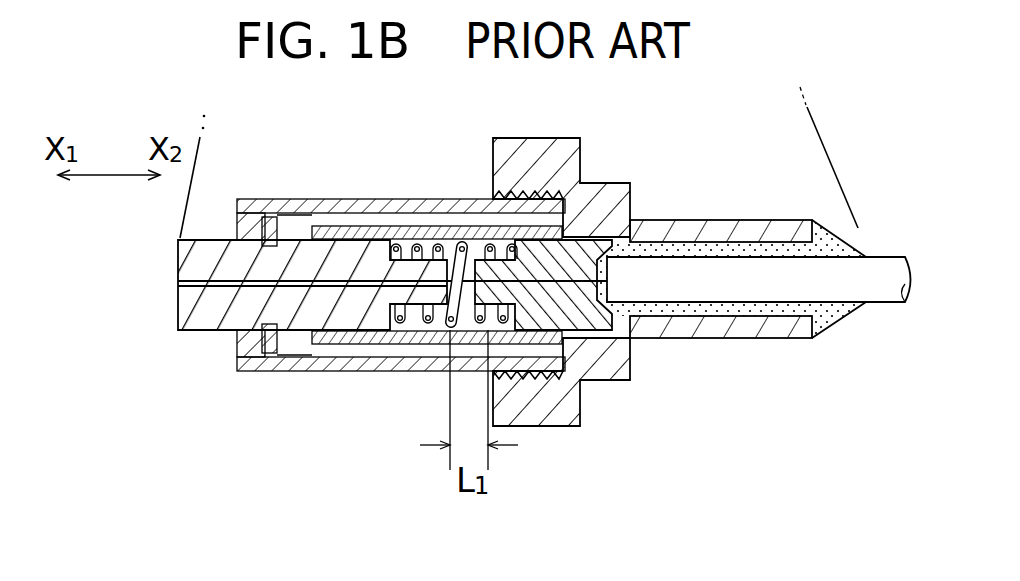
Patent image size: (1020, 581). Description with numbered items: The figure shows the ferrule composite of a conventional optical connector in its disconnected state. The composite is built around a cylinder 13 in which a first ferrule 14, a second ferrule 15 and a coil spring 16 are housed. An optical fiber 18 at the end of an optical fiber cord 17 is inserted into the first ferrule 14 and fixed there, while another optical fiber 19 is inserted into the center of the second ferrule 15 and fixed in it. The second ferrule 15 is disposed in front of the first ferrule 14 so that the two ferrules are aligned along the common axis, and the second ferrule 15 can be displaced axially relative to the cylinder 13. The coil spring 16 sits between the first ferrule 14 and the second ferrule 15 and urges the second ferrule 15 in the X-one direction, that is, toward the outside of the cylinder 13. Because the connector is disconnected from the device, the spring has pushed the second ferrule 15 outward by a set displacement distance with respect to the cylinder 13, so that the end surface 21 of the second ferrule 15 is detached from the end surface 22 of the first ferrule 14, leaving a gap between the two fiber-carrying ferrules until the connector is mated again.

The cylinder 13 is at (395, 199).
The first ferrule 14 is at (575, 318).
The second ferrule 15 is at (300, 360).
The coil spring 16 is at (357, 372).
The optical fiber cord 17 is at (882, 292).
The optical fiber 18 is at (561, 300).
The optical fiber 19 is at (225, 275).
The end surface 21 is at (410, 368).
The end surface 22 is at (455, 340).